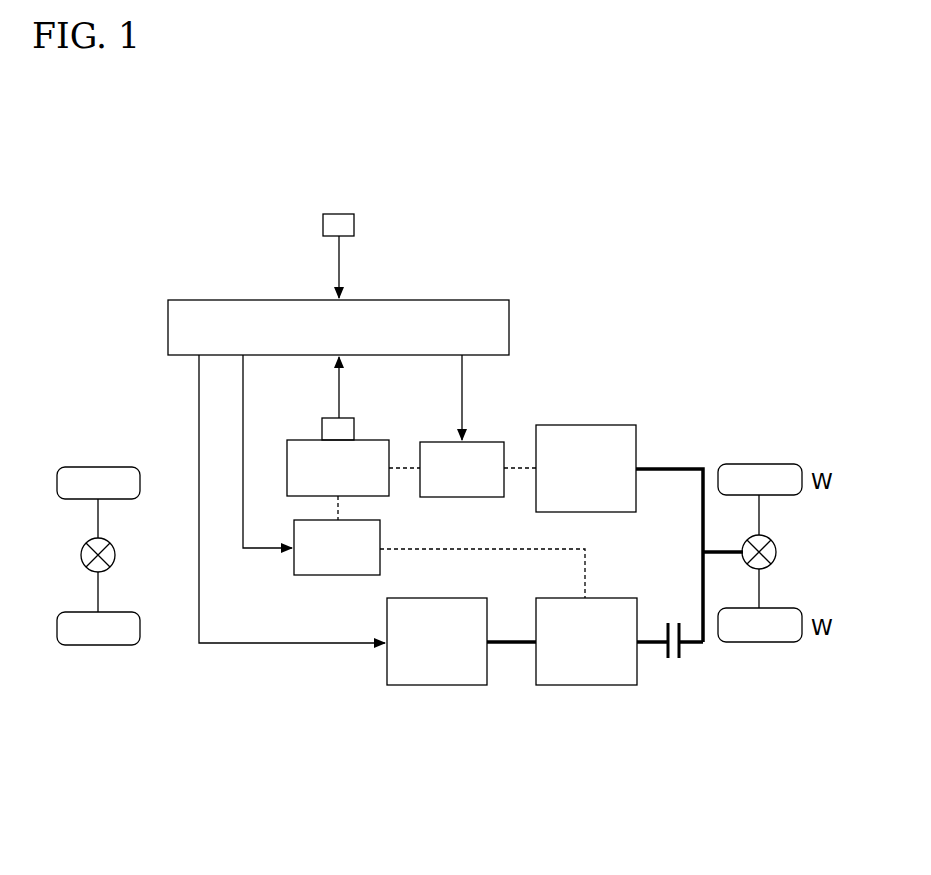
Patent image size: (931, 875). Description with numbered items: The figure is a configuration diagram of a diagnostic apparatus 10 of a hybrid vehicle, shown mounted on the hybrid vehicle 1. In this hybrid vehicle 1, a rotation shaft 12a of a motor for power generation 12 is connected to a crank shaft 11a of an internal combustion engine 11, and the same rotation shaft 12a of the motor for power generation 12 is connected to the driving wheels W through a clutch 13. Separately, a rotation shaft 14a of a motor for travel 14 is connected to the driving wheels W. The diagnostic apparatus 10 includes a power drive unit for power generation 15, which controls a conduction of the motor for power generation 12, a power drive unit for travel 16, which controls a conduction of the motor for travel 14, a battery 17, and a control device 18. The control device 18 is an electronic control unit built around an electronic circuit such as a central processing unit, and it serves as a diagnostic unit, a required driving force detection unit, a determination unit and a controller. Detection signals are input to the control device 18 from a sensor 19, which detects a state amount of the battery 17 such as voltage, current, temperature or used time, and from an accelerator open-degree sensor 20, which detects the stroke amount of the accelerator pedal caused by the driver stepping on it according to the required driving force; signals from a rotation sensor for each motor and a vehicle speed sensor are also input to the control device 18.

The hybrid vehicle 1 is at (710, 194).
The diagnostic apparatus 10 is at (650, 274).
The internal combustion engine 11 is at (440, 598).
The crank shaft 11a is at (513, 646).
The motor for power generation 12 is at (610, 598).
The rotation shaft 12a is at (650, 646).
The clutch 13 is at (682, 655).
The motor for travel 14 is at (587, 425).
The rotation shaft 14a is at (667, 467).
The power drive unit for power generation 15 is at (380, 537).
The power drive unit for travel 16 is at (483, 442).
The battery 17 is at (372, 440).
The control device 18 is at (465, 300).
The sensor 19 is at (327, 418).
The accelerator open-degree sensor 20 is at (344, 214).